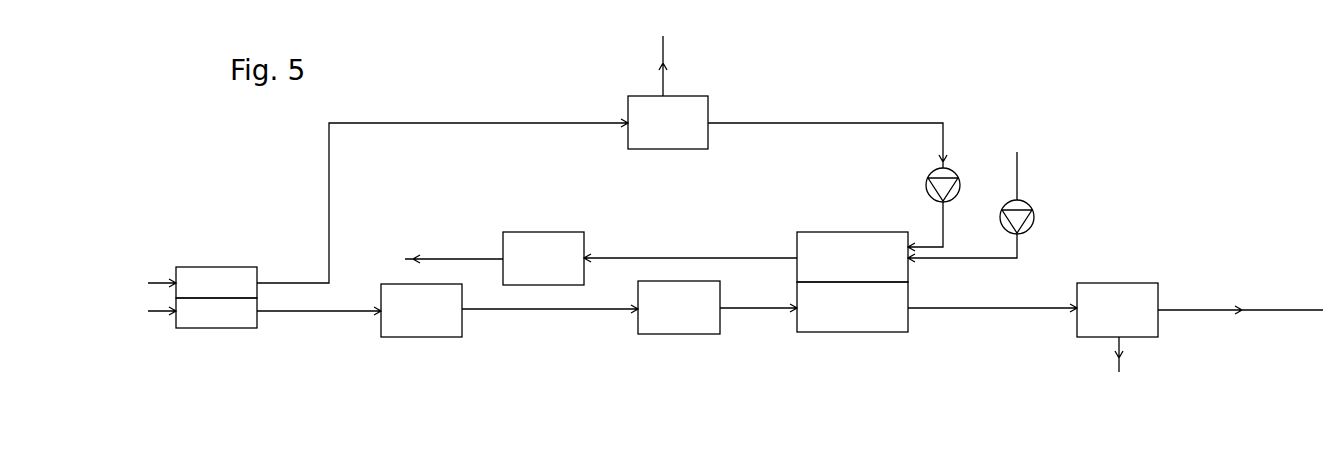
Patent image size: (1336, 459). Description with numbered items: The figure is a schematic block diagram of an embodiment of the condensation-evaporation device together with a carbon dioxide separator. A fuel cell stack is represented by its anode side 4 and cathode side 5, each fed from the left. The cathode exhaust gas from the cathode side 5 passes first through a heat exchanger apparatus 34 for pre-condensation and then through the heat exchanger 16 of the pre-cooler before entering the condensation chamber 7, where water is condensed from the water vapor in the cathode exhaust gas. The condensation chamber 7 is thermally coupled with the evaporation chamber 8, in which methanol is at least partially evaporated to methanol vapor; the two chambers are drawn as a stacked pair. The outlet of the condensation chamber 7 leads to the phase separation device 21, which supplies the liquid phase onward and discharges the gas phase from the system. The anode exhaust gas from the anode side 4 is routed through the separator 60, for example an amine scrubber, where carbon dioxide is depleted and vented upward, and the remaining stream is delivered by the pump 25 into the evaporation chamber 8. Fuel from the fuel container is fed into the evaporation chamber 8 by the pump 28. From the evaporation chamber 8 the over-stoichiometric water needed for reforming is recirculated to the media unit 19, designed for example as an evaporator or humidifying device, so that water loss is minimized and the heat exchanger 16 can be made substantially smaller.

The anode side 4 is at (216, 282).
The cathode side 5 is at (216, 313).
The heat exchanger apparatus 34 is at (421, 310).
The heat exchanger 16 is at (679, 307).
The evaporation chamber 8 is at (852, 257).
The condensation chamber 7 is at (852, 307).
The media unit 19 is at (543, 258).
The separator 60 is at (668, 122).
The phase separation device 21 is at (1117, 310).
The pump 25 is at (933, 179).
The pump 28 is at (1007, 215).